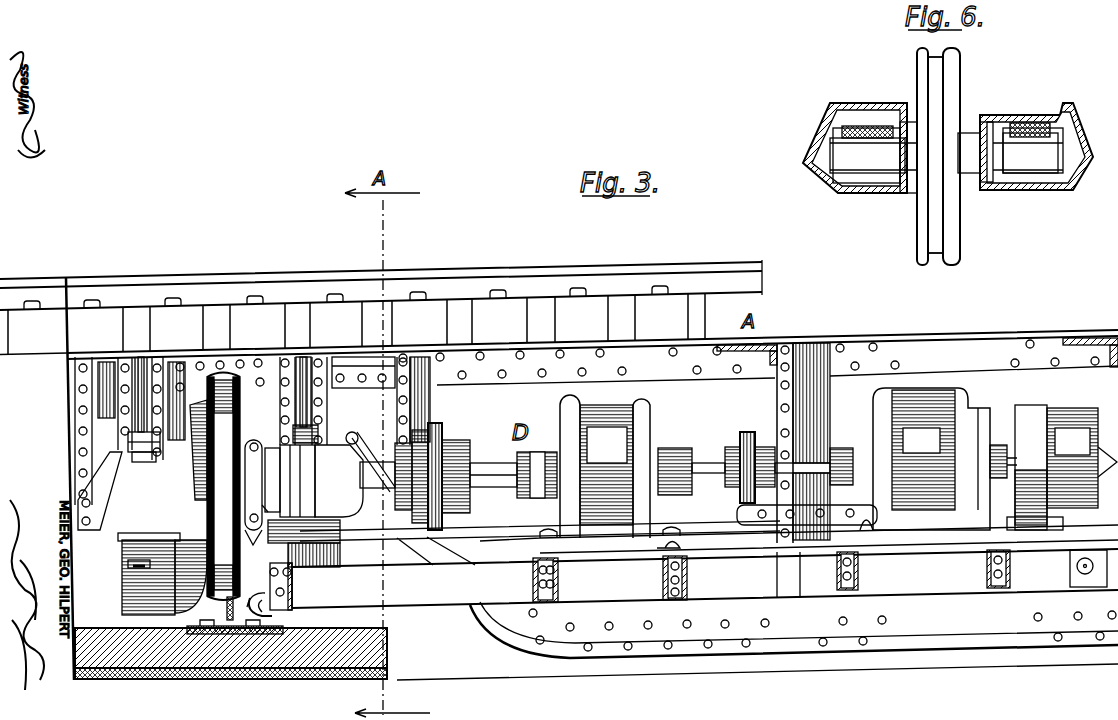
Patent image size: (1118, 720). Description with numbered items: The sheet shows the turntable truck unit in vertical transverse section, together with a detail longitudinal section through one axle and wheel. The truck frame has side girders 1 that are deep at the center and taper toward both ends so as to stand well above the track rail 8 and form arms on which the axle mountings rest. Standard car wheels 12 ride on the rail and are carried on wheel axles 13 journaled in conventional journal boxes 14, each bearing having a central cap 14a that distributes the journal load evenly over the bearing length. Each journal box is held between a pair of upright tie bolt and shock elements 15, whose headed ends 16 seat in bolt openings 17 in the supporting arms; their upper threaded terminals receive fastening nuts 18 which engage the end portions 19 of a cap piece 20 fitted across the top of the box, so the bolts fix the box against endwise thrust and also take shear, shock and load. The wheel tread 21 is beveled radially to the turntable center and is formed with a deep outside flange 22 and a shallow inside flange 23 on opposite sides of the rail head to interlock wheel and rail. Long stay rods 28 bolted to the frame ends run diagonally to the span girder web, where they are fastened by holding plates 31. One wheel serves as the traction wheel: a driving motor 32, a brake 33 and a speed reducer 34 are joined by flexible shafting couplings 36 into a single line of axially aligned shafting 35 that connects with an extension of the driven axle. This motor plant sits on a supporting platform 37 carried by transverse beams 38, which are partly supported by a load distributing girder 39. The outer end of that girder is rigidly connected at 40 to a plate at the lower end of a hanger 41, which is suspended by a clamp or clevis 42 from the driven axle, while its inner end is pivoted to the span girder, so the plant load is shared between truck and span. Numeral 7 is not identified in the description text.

In FIG. 3, the side girder 1 is at (132, 586).
In FIG. 3, the rail clip 7 is at (235, 613).
In FIG. 3, the track rail 8 is at (226, 606).
In FIG. 6, the truck wheel 12 is at (918, 95).
In FIG. 3, the truck wheel 12 is at (240, 425).
In FIG. 6, the wheel axle 13 is at (867, 170).
In FIG. 6, the journal box 14 is at (822, 180).
In FIG. 3, the journal box 14 is at (233, 481).
In FIG. 6, the central cap 14a is at (1010, 118).
In FIG. 3, the tie bolt and shock element 15 is at (140, 506).
In FIG. 3, the headed end 16 is at (118, 551).
In FIG. 3, the bolt opening 17 is at (128, 566).
In FIG. 3, the fastening nut 18 is at (140, 438).
In FIG. 3, the end portion of cap piece 19 is at (225, 437).
In FIG. 3, the cap piece 20 is at (138, 455).
In FIG. 6, the tread portion 21 is at (932, 204).
In FIG. 3, the tread portion 21 is at (222, 380).
In FIG. 6, the outside flange 22 is at (918, 231).
In FIG. 3, the outside flange 22 is at (207, 382).
In FIG. 6, the inside flange 23 is at (960, 229).
In FIG. 3, the inside flange 23 is at (238, 382).
In FIG. 3, the stay rod 28 is at (512, 520).
In FIG. 3, the holding plate 31 is at (740, 512).
In FIG. 3, the driving motor 32 is at (931, 459).
In FIG. 3, the brake 33 is at (1053, 467).
In FIG. 3, the speed reducer 34 is at (605, 466).
In FIG. 3, the shafting 35 is at (703, 465).
In FIG. 3, the flexible shafting coupling 36 is at (450, 448).
In FIG. 3, the supporting platform 37 is at (746, 560).
In FIG. 3, the transverse beam 38 is at (655, 581).
In FIG. 3, the load distributing girder 39 is at (705, 578).
In FIG. 3, the rigid connection 40 is at (268, 612).
In FIG. 3, the hanger 41 is at (292, 588).
In FIG. 3, the clamp or clevis 42 is at (270, 505).